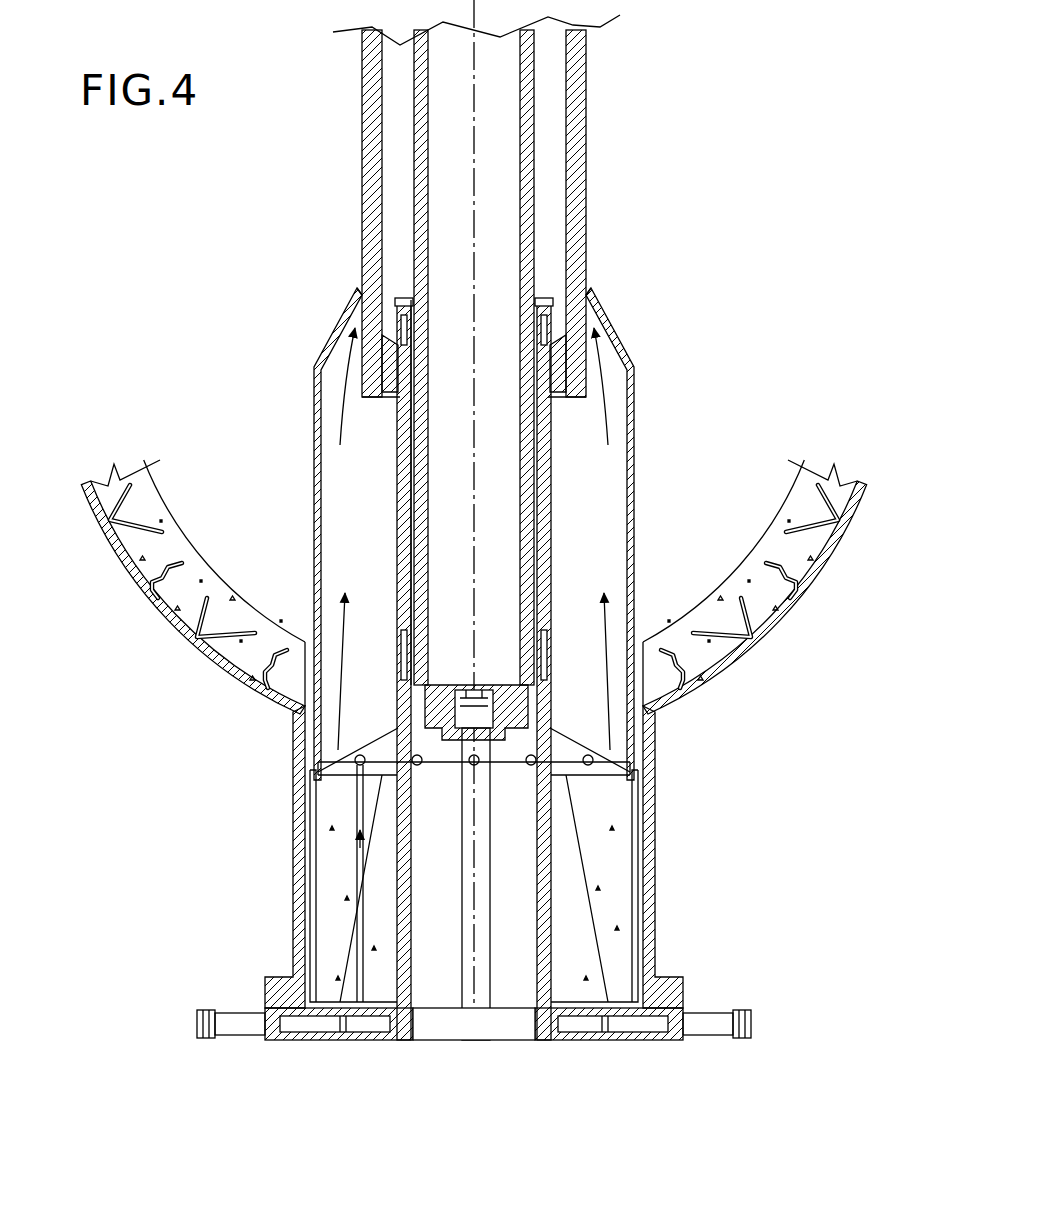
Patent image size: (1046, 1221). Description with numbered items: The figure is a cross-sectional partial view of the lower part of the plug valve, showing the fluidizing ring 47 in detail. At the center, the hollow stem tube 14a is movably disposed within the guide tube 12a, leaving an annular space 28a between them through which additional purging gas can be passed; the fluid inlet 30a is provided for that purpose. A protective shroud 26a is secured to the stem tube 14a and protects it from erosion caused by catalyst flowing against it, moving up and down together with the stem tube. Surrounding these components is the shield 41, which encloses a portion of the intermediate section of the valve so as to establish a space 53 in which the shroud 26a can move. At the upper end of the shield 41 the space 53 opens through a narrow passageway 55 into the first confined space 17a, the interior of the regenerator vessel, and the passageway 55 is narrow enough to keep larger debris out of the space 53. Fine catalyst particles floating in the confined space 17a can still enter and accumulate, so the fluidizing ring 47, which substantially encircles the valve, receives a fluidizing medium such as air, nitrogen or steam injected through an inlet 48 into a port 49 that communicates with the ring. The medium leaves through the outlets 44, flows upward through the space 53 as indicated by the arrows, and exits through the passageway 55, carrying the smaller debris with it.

The first confined space 17a is at (222, 232).
The stem tube 14a is at (532, 80).
The protective shroud 26a is at (590, 170).
The guide tube 12a is at (553, 468).
The annular space 28a is at (413, 545).
The shield 41 is at (312, 489).
The passageway 55 is at (362, 292).
The space 53 is at (603, 552).
The outlets 44 is at (360, 754).
The fluidizing ring 47 is at (352, 810).
The inlet 48 is at (235, 1012).
The fluid inlet 30a is at (710, 1012).
The port 49 is at (320, 1040).